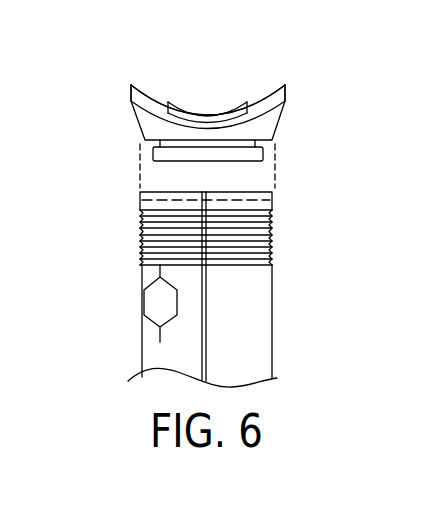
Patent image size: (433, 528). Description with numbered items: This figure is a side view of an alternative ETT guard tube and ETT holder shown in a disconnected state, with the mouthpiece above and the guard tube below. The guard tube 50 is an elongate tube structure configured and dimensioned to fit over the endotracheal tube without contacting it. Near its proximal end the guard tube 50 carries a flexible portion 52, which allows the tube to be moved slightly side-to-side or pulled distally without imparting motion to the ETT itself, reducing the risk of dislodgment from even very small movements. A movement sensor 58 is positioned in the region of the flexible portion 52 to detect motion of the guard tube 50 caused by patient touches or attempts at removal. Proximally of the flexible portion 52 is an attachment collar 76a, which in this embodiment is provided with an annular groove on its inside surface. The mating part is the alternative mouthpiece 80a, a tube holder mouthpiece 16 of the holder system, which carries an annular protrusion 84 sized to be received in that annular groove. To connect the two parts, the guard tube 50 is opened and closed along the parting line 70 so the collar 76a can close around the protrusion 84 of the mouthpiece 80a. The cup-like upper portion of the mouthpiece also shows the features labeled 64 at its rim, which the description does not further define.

The tube holder mouthpiece 16 is at (176, 108).
The guard tube 50 is at (261, 293).
The flexible portion 52 is at (271, 219).
The movement sensor 58 is at (150, 303).
The rim corners 64 is at (132, 84).
The parting line 70 is at (197, 342).
The attachment collar 76a is at (140, 203).
The alternative mouthpiece 80a is at (139, 121).
The annular protrusion 84 is at (264, 152).